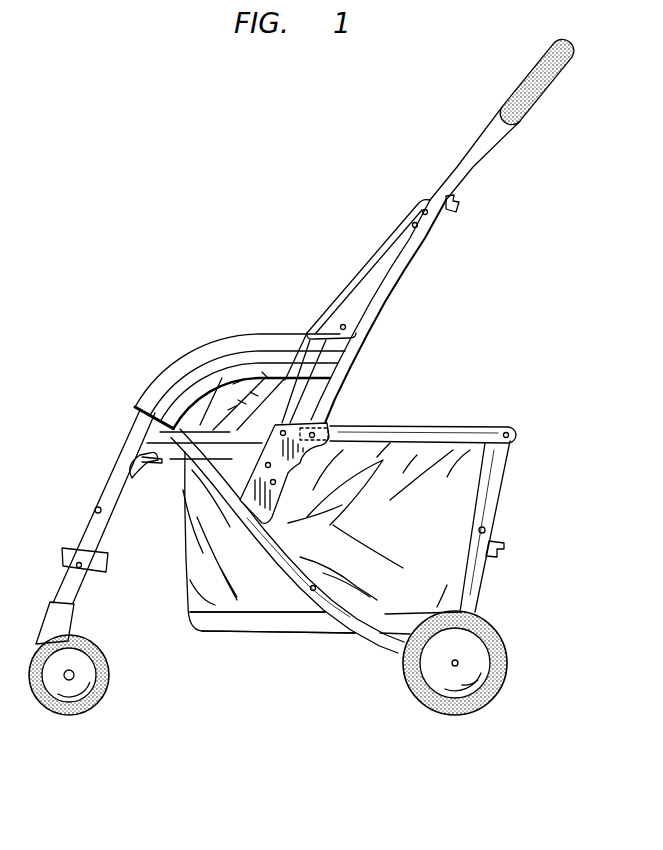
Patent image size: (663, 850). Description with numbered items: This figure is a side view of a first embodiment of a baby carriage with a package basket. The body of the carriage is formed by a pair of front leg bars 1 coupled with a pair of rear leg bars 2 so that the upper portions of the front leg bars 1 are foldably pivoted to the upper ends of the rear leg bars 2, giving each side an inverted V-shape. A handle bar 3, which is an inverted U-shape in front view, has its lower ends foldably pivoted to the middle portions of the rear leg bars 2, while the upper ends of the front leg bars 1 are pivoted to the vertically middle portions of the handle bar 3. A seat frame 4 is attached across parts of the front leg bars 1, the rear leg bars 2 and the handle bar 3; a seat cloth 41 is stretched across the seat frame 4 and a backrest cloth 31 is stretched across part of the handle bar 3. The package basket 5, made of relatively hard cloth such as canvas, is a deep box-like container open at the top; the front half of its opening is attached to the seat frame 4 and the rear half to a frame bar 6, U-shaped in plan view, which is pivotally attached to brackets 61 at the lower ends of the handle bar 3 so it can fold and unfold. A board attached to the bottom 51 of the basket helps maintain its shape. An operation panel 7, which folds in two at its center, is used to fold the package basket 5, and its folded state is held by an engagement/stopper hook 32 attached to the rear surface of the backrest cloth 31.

The front leg bar 1 is at (130, 448).
The rear leg bar 2 is at (378, 632).
The handle bar 3 is at (484, 137).
The backrest cloth 31 is at (381, 313).
The engagement/stopper hook 32 is at (458, 209).
The seat frame 4 is at (156, 453).
The seat cloth 41 is at (222, 452).
The package basket 5 is at (417, 540).
The bottom 51 is at (285, 623).
The frame bar 6 is at (458, 432).
The bracket 61 is at (330, 421).
The operation panel 7 is at (498, 536).